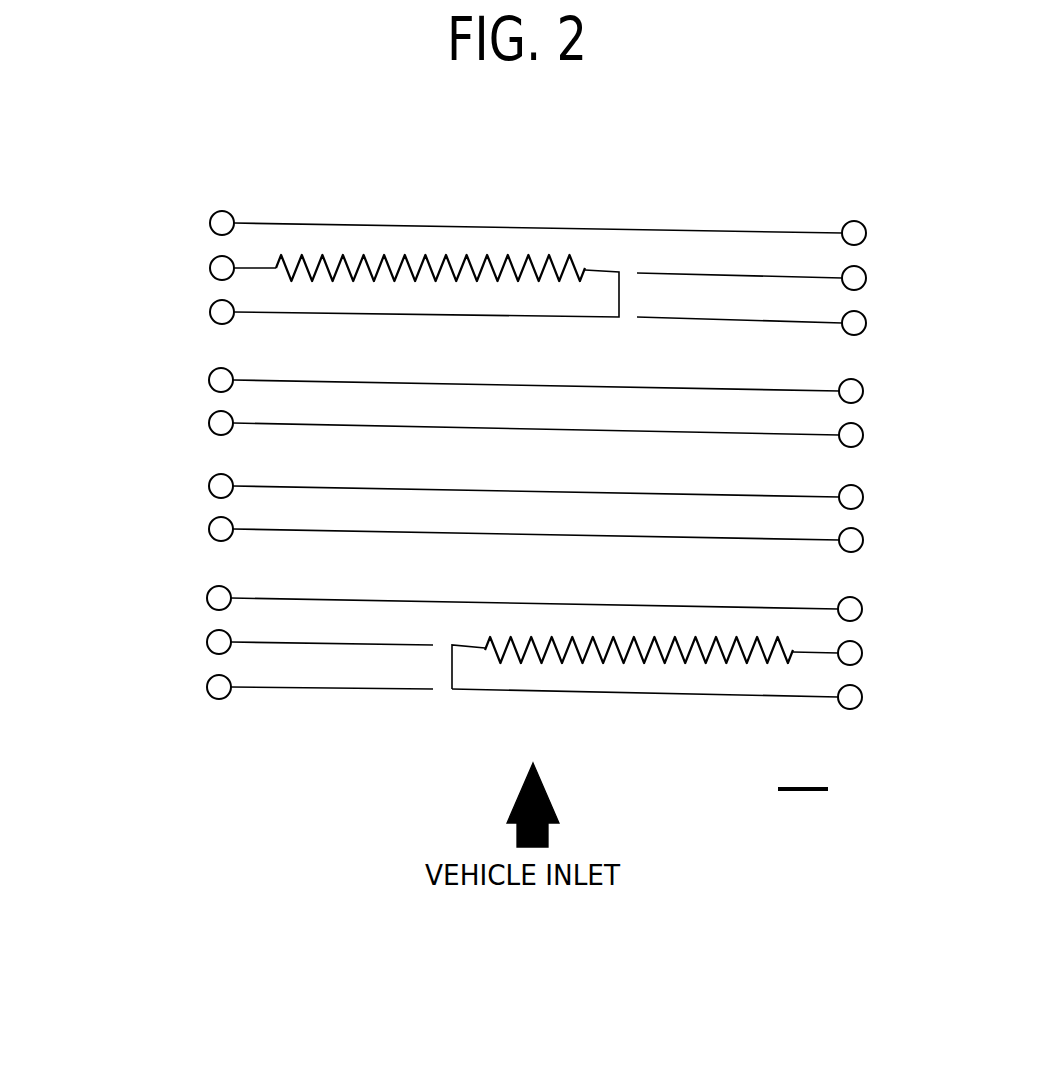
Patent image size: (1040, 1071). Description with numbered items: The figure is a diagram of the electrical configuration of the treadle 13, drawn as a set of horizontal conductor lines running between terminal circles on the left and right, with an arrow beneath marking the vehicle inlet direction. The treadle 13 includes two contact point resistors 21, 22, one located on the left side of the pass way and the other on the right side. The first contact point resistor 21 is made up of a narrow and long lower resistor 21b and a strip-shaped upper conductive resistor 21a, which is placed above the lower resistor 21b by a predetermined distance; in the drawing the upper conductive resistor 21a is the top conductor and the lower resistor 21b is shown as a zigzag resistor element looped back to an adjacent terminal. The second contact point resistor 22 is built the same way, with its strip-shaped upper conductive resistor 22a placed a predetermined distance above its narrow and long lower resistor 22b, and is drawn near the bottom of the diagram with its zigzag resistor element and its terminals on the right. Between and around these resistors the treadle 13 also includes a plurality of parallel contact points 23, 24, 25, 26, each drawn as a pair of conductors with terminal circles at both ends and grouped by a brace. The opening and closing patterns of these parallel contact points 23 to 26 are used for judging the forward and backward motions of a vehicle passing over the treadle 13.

The treadle 13 is at (803, 770).
The contact point resistor 21 is at (118, 240).
The upper conductive resistor 21a is at (210, 223).
The lower resistor 21b is at (210, 268).
The contact point resistor 22 is at (958, 678).
The upper conductive resistor 22a is at (863, 653).
The lower resistor 22b is at (863, 697).
The parallel contact point 23 is at (866, 278).
The parallel contact point 24 is at (863, 391).
The parallel contact point 25 is at (863, 497).
The parallel contact point 26 is at (202, 641).